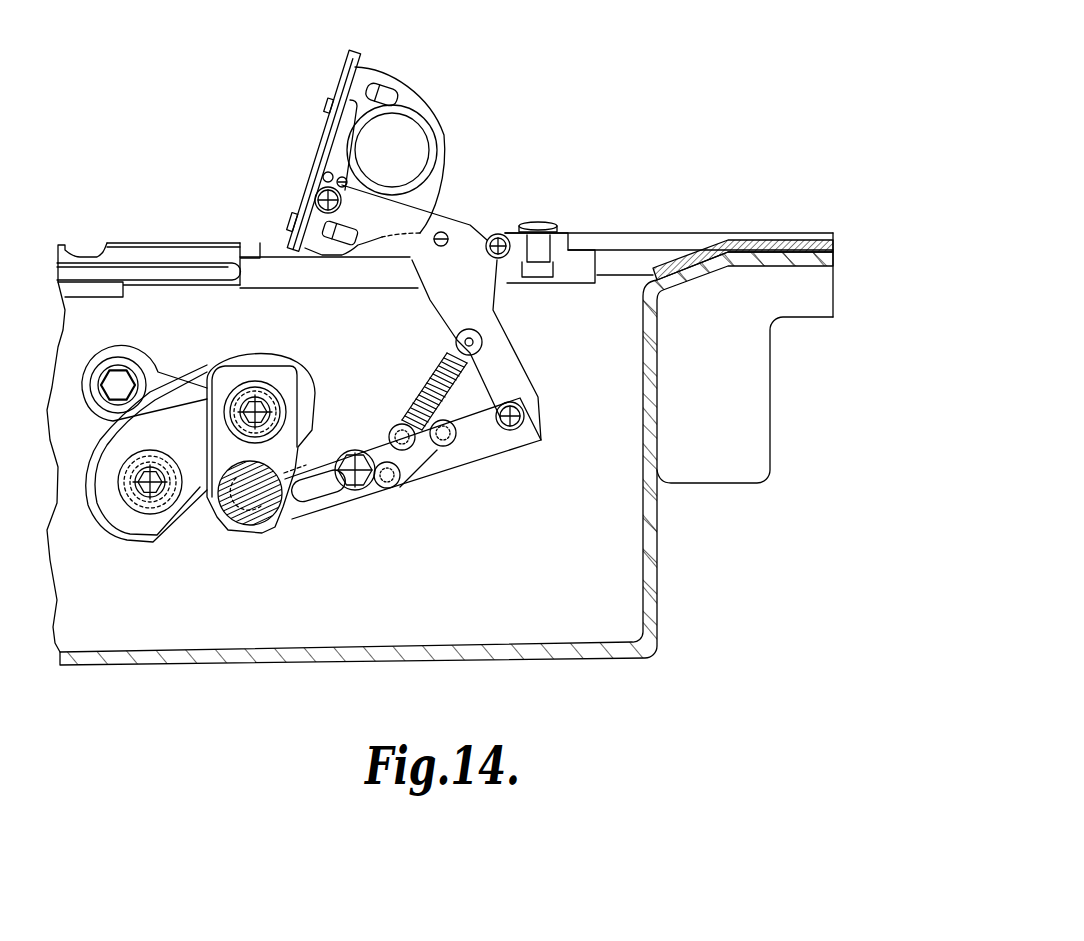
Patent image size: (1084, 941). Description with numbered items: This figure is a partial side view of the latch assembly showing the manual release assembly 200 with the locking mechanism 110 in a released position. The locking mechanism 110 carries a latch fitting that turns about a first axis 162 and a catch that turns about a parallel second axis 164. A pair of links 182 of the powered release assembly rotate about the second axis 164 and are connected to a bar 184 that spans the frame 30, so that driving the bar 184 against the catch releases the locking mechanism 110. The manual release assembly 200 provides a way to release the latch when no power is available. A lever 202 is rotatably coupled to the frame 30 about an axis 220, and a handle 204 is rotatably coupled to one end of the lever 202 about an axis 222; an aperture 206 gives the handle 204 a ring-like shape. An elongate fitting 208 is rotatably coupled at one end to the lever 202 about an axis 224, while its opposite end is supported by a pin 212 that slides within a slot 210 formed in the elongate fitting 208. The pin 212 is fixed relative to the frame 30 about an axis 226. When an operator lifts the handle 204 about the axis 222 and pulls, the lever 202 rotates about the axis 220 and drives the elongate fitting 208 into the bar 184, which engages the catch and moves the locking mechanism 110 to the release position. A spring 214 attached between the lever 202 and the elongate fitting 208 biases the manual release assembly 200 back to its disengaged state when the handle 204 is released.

The frame 30 is at (652, 232).
The locking mechanism 110 is at (124, 552).
The first axis 162 is at (152, 485).
The second axis 164 is at (257, 408).
The links 182 is at (175, 398).
The bar 184 is at (258, 475).
The manual release assembly 200 is at (371, 151).
The lever 202 is at (448, 218).
The handle 204 is at (417, 97).
The aperture 206 is at (432, 136).
The elongate fitting 208 is at (450, 470).
The slot 210 is at (323, 492).
The pin 212 is at (376, 495).
The spring 214 is at (428, 383).
The axis 220 is at (499, 240).
The axis 222 is at (315, 196).
The axis 224 is at (514, 416).
The axis 226 is at (368, 455).